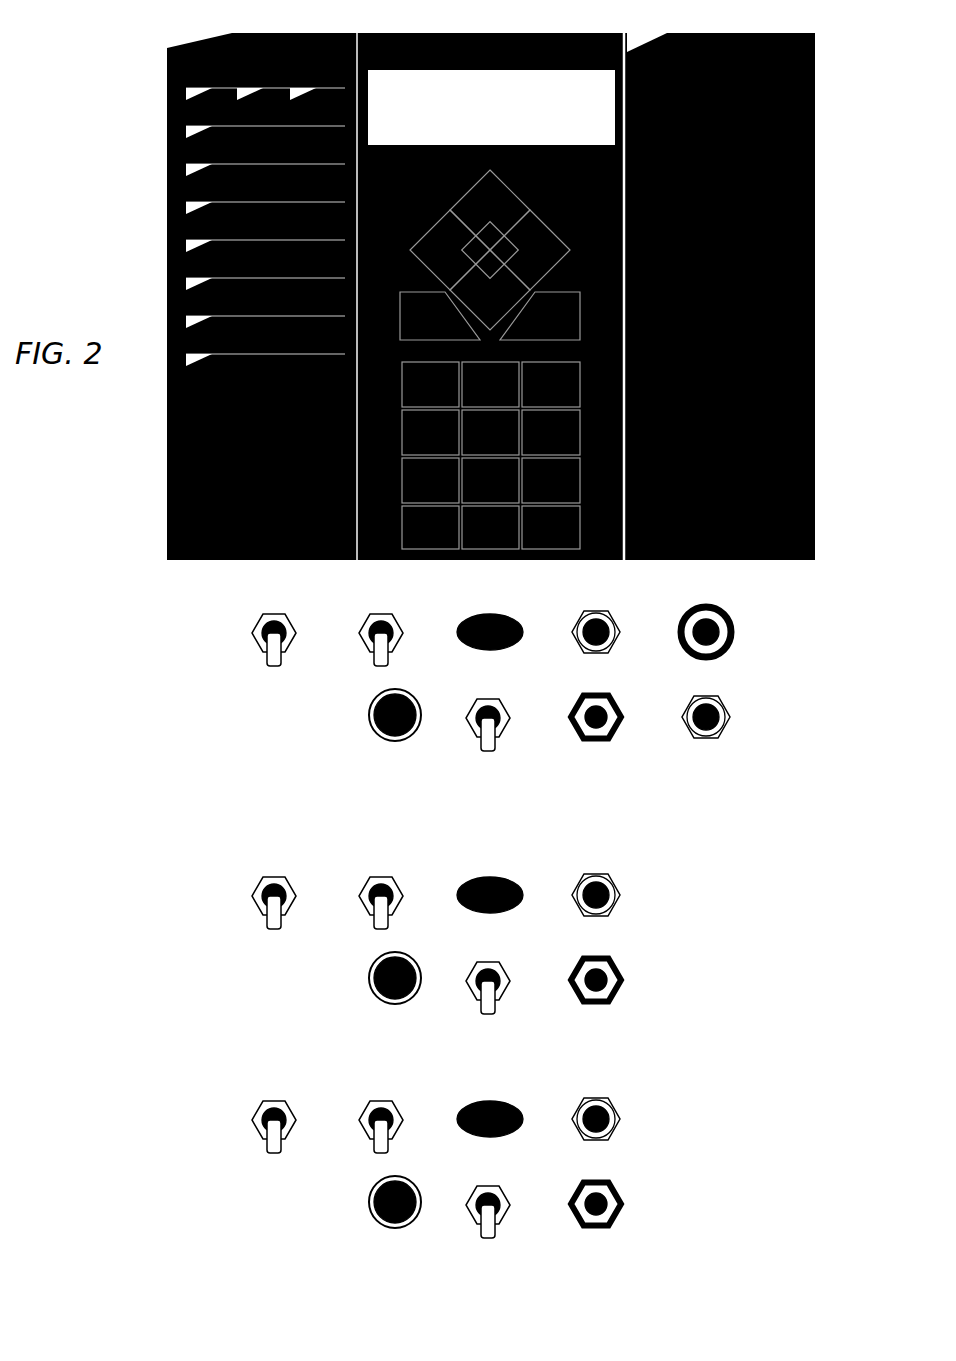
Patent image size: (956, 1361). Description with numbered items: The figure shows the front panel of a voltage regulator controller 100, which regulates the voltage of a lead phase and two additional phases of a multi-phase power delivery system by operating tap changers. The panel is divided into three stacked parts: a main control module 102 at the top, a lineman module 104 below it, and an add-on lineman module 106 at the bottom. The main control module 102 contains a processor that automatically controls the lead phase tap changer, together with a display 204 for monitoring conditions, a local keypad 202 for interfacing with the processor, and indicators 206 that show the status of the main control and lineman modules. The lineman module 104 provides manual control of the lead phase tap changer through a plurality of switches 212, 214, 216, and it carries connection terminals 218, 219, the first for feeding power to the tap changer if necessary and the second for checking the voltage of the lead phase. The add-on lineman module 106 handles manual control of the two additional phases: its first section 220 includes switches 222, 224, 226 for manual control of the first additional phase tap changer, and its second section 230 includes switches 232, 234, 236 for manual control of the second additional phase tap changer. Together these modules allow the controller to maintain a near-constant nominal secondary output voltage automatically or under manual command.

The voltage regulator controller 100 is at (454, 658).
The main control module 102 is at (527, 296).
The lineman module 104 is at (527, 695).
The add-on lineman module 106 is at (488, 1060).
The local keypad 202 is at (586, 385).
The display 204 is at (491, 107).
The indicators 206 is at (261, 400).
The switch 212 is at (262, 628).
The switch 214 is at (373, 633).
The switch 216 is at (500, 716).
The connection terminals 218 is at (722, 643).
The connection terminals 219 is at (608, 645).
The first section 220 is at (527, 946).
The switch 222 is at (262, 891).
The switch 224 is at (373, 896).
The switch 226 is at (500, 979).
The second section 230 is at (527, 1172).
The switch 232 is at (262, 1115).
The switch 234 is at (373, 1120).
The switch 236 is at (500, 1203).